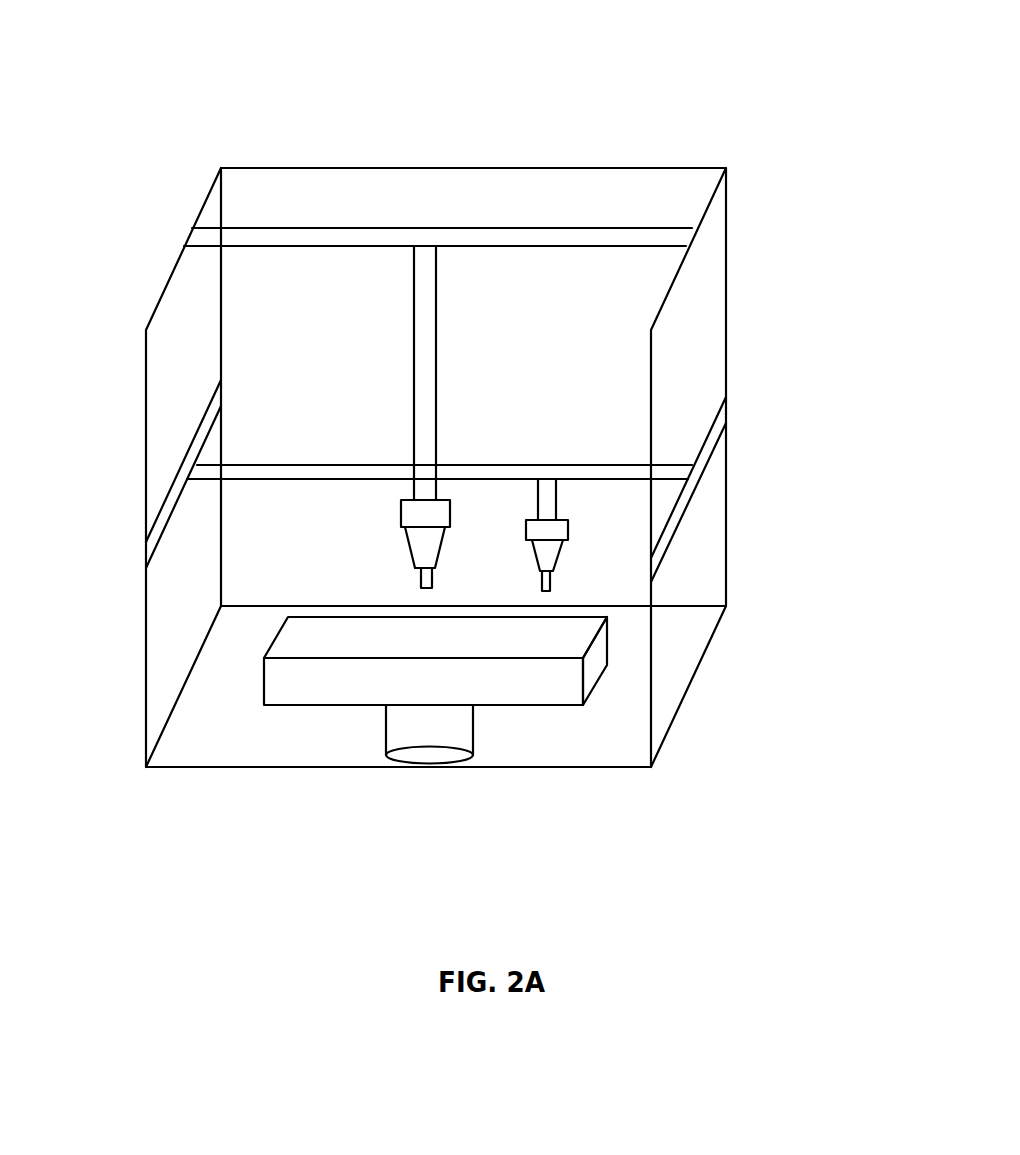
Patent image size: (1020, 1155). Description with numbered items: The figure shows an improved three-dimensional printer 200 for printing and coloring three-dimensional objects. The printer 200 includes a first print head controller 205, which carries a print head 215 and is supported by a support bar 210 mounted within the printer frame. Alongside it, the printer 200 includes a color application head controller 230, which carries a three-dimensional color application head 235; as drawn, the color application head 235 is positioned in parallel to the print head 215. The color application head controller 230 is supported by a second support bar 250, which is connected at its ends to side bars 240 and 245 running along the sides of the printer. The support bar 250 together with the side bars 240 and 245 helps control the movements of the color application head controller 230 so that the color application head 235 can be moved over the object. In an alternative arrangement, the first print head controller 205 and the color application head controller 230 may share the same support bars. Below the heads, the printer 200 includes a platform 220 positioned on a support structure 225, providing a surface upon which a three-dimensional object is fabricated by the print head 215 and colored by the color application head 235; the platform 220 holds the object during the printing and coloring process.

The improved 3D printer 200 is at (684, 100).
The first print head controller 205 is at (434, 402).
The support bar 210 is at (658, 227).
The print head 215 is at (420, 580).
The platform 220 is at (260, 690).
The support structure 225 is at (475, 742).
The color application head controller 230 is at (557, 508).
The 3D color application head 235 is at (552, 590).
The side bar 240 is at (702, 438).
The side bar 245 is at (178, 465).
The support bar 250 is at (507, 463).